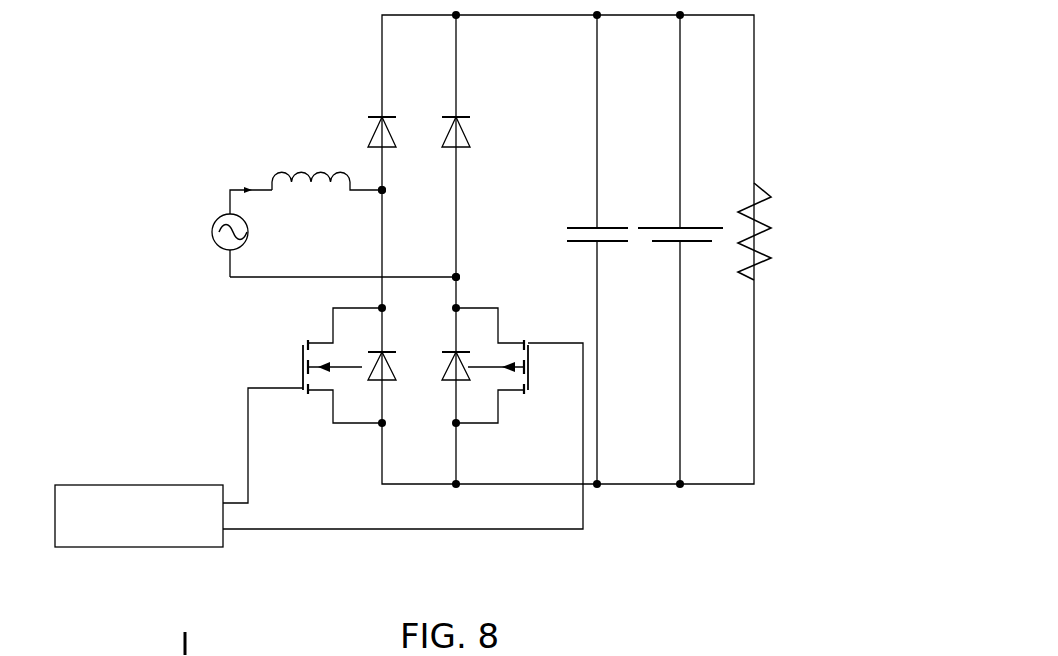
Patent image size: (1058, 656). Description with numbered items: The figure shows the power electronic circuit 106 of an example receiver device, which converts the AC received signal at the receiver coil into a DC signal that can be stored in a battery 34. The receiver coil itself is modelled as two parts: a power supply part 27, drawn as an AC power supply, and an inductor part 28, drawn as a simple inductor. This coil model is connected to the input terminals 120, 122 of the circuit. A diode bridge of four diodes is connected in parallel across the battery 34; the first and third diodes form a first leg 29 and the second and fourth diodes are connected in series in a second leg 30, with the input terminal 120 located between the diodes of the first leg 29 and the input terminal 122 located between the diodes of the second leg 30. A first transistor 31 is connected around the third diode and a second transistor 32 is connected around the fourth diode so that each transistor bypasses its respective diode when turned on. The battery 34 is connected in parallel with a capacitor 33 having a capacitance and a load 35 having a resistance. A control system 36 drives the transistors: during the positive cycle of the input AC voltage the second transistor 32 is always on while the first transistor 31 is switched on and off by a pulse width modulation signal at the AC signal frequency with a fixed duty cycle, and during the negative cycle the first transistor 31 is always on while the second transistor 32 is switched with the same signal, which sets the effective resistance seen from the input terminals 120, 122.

The power supply part 27 is at (212, 251).
The inductor part 28 is at (290, 168).
The first leg 29 is at (362, 126).
The second leg 30 is at (476, 126).
The transistor Q1 31 is at (255, 366).
The transistor Q2 32 is at (550, 310).
The capacitor 33 is at (559, 232).
The battery 34 is at (662, 222).
The load 35 is at (780, 217).
The control system 36 is at (230, 541).
The input terminal 120 is at (384, 191).
The input terminal 122 is at (458, 277).
The power electronic circuit 106 is at (838, 486).